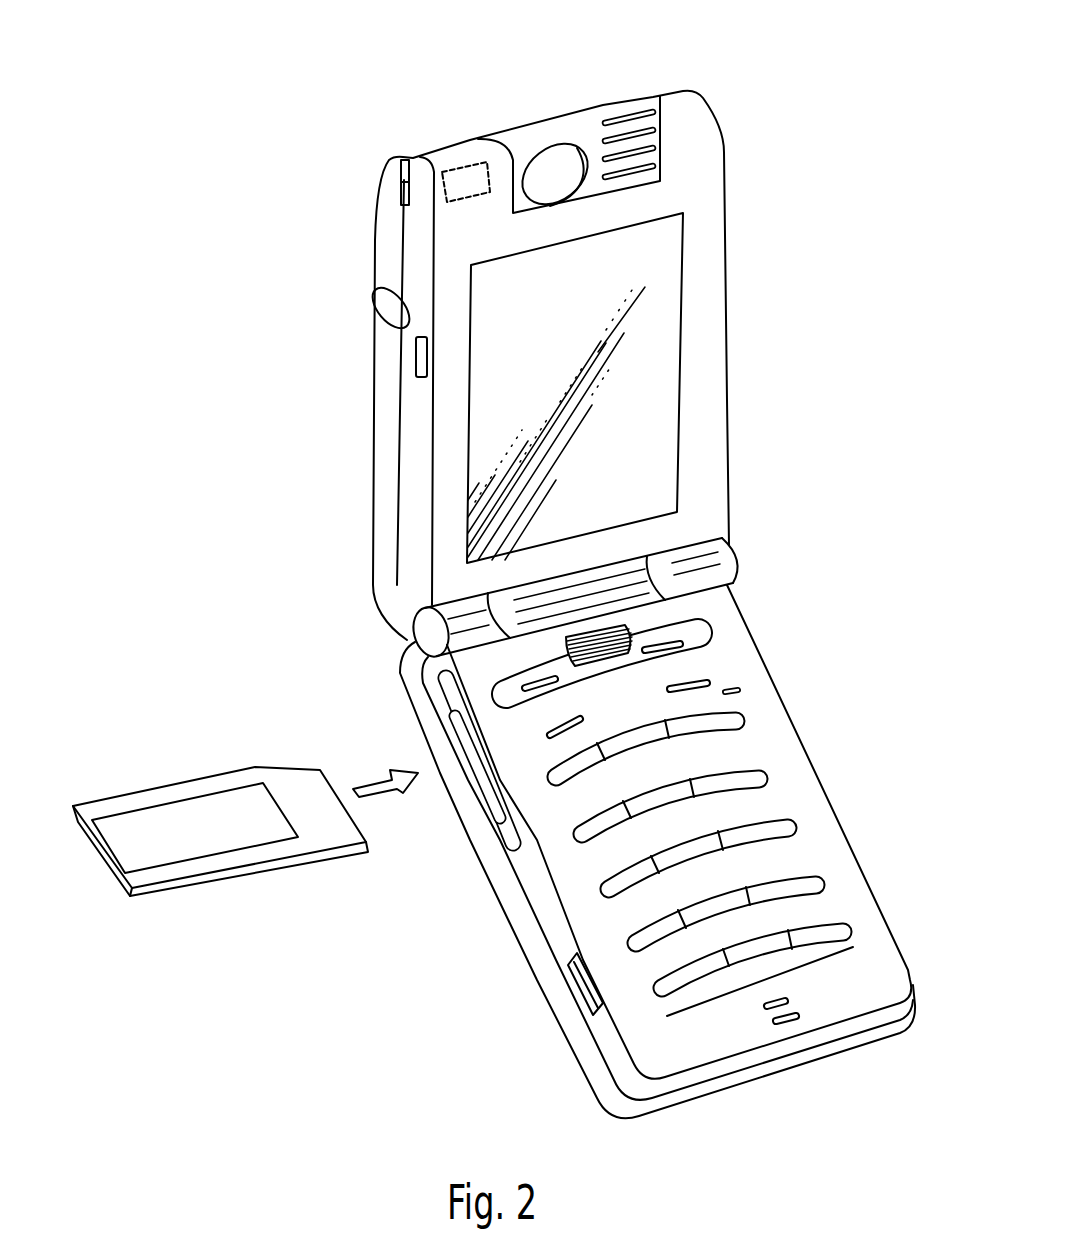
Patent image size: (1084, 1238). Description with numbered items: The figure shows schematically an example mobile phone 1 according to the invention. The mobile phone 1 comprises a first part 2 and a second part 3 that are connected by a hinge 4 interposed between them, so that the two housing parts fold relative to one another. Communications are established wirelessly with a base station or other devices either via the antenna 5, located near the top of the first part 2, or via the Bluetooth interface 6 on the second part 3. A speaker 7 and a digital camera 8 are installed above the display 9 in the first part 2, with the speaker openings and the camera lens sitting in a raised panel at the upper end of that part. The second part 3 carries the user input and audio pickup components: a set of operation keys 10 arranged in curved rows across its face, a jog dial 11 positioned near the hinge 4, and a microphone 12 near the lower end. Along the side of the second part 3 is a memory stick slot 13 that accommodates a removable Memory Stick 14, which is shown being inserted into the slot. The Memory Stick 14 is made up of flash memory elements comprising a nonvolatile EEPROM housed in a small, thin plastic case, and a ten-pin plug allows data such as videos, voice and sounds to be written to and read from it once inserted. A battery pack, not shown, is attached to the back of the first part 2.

The mobile phone 1 is at (790, 97).
The first part 2 is at (740, 320).
The second part 3 is at (790, 637).
The hinge 4 is at (740, 560).
The antenna 5 is at (457, 172).
The Bluetooth interface 6 is at (583, 982).
The speaker 7 is at (620, 125).
The digital camera 8 is at (548, 180).
The display 9 is at (652, 415).
The operation keys 10 is at (788, 662).
The jog dial 11 is at (588, 642).
The microphone 12 is at (788, 1020).
The memory stick slot 13 is at (508, 849).
The Memory Stick 14 is at (143, 820).